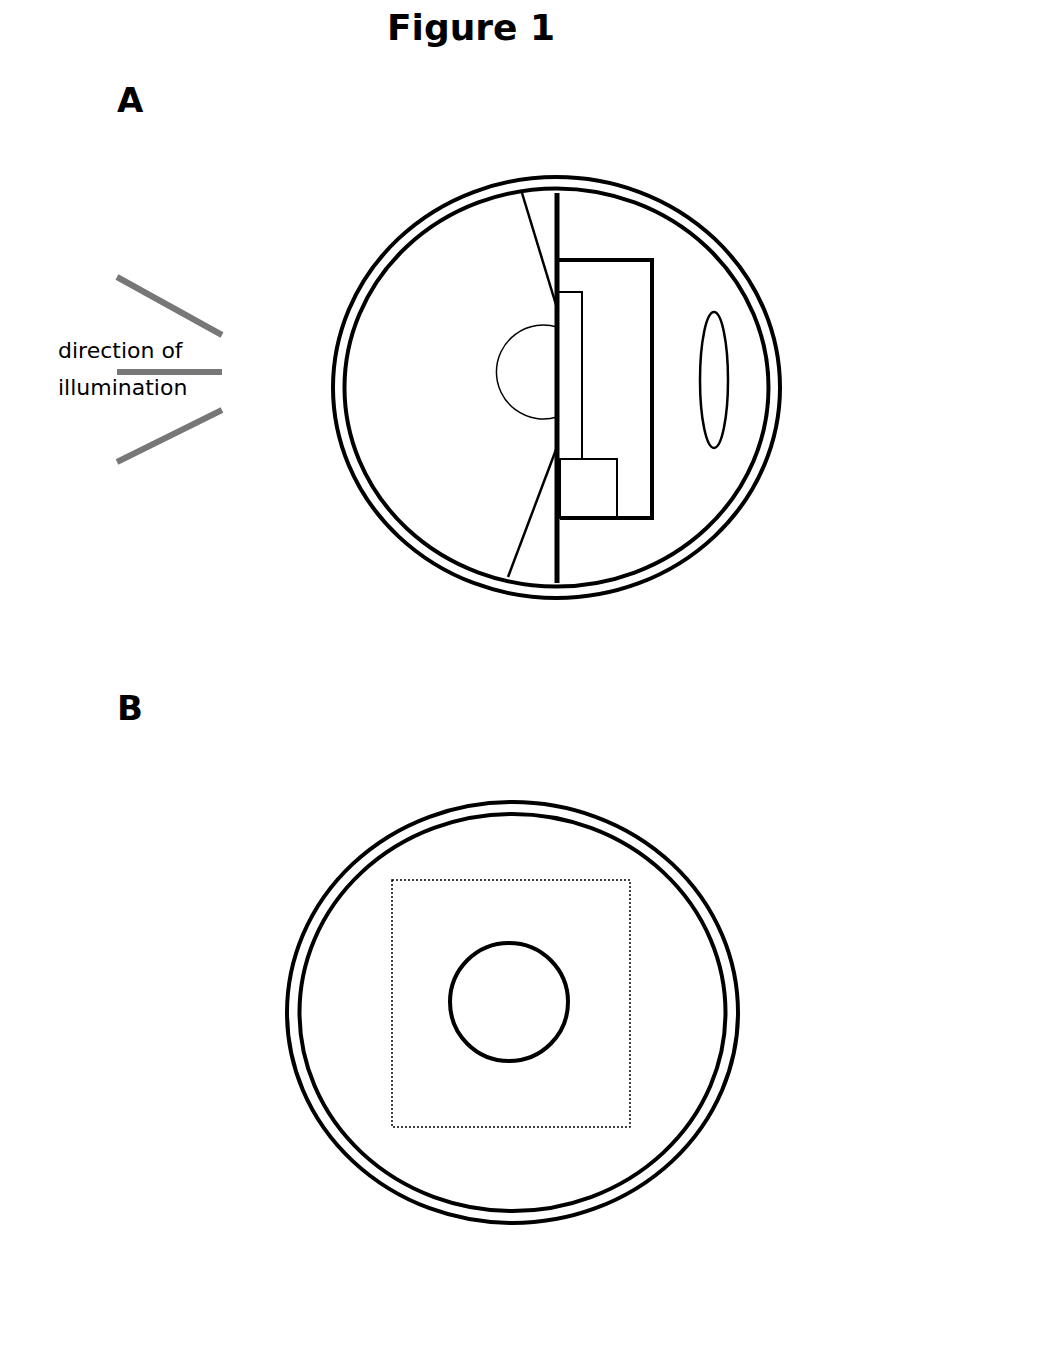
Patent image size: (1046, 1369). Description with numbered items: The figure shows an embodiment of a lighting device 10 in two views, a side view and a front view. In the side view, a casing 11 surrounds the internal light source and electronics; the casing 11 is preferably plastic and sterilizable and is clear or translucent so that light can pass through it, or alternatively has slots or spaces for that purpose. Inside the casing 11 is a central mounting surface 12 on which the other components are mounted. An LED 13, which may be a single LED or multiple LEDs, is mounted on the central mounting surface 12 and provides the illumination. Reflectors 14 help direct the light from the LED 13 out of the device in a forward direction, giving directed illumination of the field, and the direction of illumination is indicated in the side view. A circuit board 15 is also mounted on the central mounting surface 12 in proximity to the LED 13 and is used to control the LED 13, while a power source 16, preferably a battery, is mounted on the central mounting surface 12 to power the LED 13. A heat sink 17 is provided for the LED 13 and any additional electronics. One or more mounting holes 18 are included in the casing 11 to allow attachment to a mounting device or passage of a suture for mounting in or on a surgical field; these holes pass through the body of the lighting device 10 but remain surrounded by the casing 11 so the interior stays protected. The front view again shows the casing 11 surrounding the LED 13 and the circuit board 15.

The lighting device 10 is at (269, 266).
The casing 11 is at (728, 245).
The central mounting surface 12 is at (563, 563).
The LED 13 is at (503, 368).
The reflectors 14 is at (533, 257).
The circuit board 15 is at (585, 281).
The power source 16 is at (591, 525).
The heat sink 17 is at (657, 470).
The mounting holes 18 is at (735, 381).